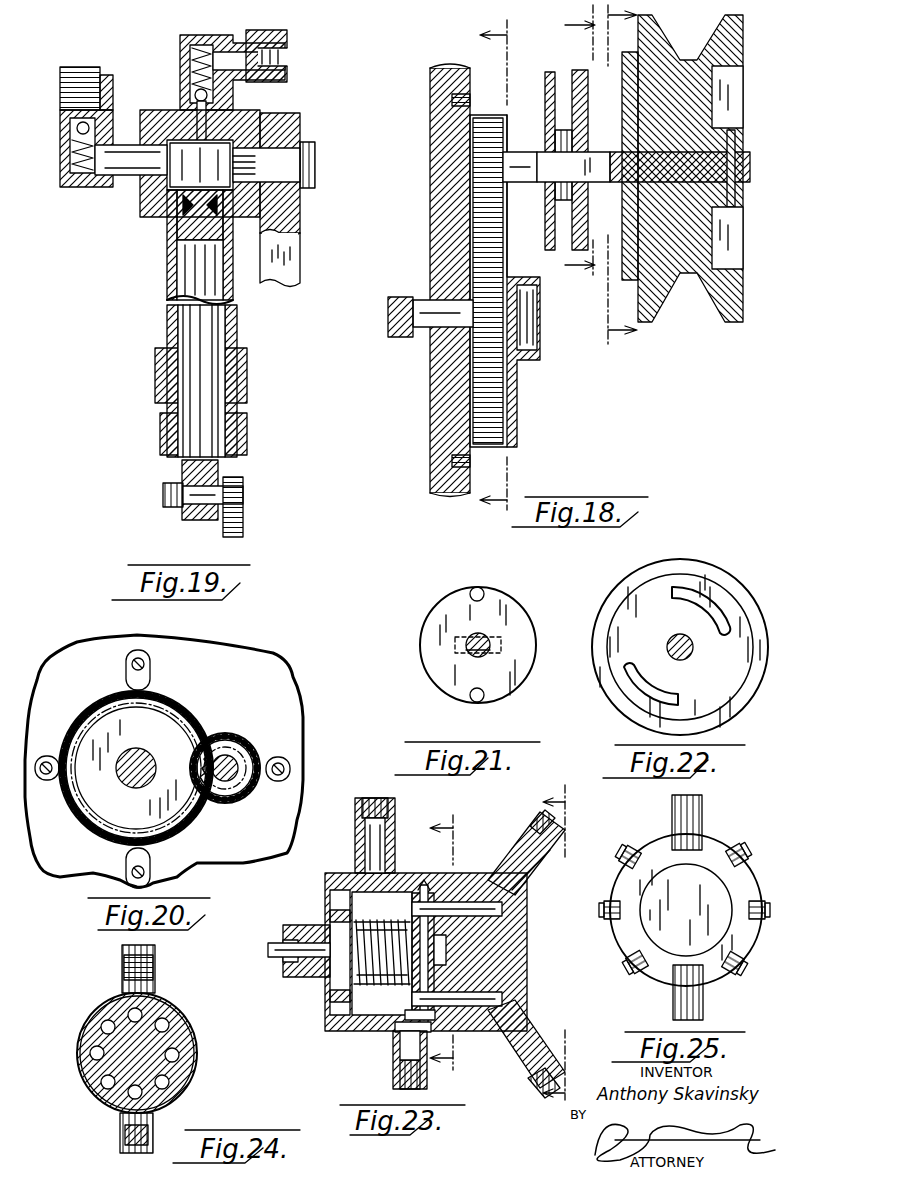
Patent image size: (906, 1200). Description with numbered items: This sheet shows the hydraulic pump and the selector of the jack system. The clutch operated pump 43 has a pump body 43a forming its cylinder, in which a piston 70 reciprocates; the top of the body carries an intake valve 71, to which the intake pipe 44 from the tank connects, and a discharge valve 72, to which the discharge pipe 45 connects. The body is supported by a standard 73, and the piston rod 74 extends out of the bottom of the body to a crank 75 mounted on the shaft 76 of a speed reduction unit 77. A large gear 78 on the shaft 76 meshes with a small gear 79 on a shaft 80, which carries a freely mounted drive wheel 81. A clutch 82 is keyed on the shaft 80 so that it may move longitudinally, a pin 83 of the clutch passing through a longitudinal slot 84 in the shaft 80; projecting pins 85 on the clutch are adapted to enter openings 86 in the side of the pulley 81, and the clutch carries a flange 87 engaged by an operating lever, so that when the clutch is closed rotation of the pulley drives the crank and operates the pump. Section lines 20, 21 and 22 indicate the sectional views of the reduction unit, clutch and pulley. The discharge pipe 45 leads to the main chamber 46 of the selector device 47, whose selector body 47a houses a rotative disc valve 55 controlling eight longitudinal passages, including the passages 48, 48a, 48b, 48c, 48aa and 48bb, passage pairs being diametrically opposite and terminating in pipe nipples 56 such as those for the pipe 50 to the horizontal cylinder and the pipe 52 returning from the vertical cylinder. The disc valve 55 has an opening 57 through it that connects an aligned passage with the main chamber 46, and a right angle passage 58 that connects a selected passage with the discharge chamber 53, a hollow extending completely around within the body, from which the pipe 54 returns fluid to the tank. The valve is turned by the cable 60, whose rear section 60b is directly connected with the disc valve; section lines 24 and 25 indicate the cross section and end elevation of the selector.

In FIG. 18, the vertical cylinder 20 is at (488, 269).
In FIG. 18, the section line 21- 21 is at (580, 148).
In FIG. 18, the section line 22- 22 is at (624, 180).
In FIG. 23, the auxiliary bracket 24 is at (439, 946).
In FIG. 23, the section line 25- 25 is at (547, 945).
In FIG. 19, the clutch operated pump 43 is at (168, 274).
In FIG. 19, the pump body 43a is at (168, 312).
In FIG. 19, the intake pipe 44 is at (60, 90).
In FIG. 19, the discharge pipe 45 is at (280, 84).
In FIG. 23, the discharge pipe 45 is at (370, 798).
In FIG. 24, the discharge pipe 45 is at (122, 950).
In FIG. 23, the main chamber 46 is at (358, 1018).
In FIG. 23, the selector device 47 is at (332, 1030).
In FIG. 24, the selector device 47 is at (88, 1022).
In FIG. 25, the selector device 47 is at (720, 898).
In FIG. 23, the selector body 47a is at (330, 1010).
In FIG. 24, the selector body 47a is at (170, 1012).
In FIG. 25, the selector body 47a is at (722, 930).
In FIG. 23, the passage 48 is at (468, 902).
In FIG. 24, the passage 48 is at (142, 1008).
In FIG. 24, the passage 48a is at (90, 1053).
In FIG. 24, the passage 48aa is at (180, 1057).
In FIG. 24, the passage 48b is at (104, 1020).
In FIG. 24, the passage 48bb is at (170, 1084).
In FIG. 24, the passage 48c is at (170, 1027).
In FIG. 23, the pipe 50 is at (530, 822).
In FIG. 25, the pipe 50 is at (692, 818).
In FIG. 23, the pipe 52 is at (515, 1075).
In FIG. 25, the pipe 52 is at (692, 998).
In FIG. 23, the discharge chamber 53 is at (430, 876).
In FIG. 23, the pipe 54 is at (395, 1075).
In FIG. 24, the pipe 54 is at (120, 1128).
In FIG. 23, the rotative disc valve 55 is at (418, 918).
In FIG. 23, the pipe nipple 56 is at (535, 878).
In FIG. 23, the opening 57 is at (425, 892).
In FIG. 23, the right angle passage 58 is at (415, 1012).
In FIG. 23, the cable 60 is at (276, 965).
In FIG. 23, the rear section 60b is at (270, 942).
In FIG. 19, the piston 70 is at (178, 222).
In FIG. 19, the intake valve 71 is at (68, 140).
In FIG. 19, the discharge valve 72 is at (196, 97).
In FIG. 19, the standard 73 is at (290, 268).
In FIG. 18, the standard 73 is at (438, 430).
In FIG. 20, the standard 73 is at (96, 652).
In FIG. 19, the piston rod 74 is at (214, 330).
In FIG. 19, the crank 75 is at (236, 495).
In FIG. 18, the crank 75 is at (398, 337).
In FIG. 18, the shaft 76 is at (418, 328).
In FIG. 20, the shaft 76 is at (146, 758).
In FIG. 18, the speed reduction unit 77 is at (540, 355).
In FIG. 20, the speed reduction unit 77 is at (86, 708).
In FIG. 18, the large gear 78 is at (470, 264).
In FIG. 20, the large gear 78 is at (161, 710).
In FIG. 18, the small gear 79 is at (475, 137).
In FIG. 20, the small gear 79 is at (230, 746).
In FIG. 18, the shaft 80 is at (592, 153).
In FIG. 21, the shaft 80 is at (468, 638).
In FIG. 22, the shaft 80 is at (690, 639).
In FIG. 18, the drive wheel 81 is at (708, 100).
In FIG. 22, the drive wheel 81 is at (753, 640).
In FIG. 18, the clutch 82 is at (578, 70).
In FIG. 21, the clutch 82 is at (508, 608).
In FIG. 18, the pin 83 is at (560, 203).
In FIG. 21, the pin 83 is at (456, 645).
In FIG. 18, the slot 84 is at (592, 183).
In FIG. 21, the slot 84 is at (470, 650).
In FIG. 21, the projecting pins 85 is at (477, 588).
In FIG. 22, the openings 86 is at (693, 590).
In FIG. 18, the flange 87 is at (545, 98).